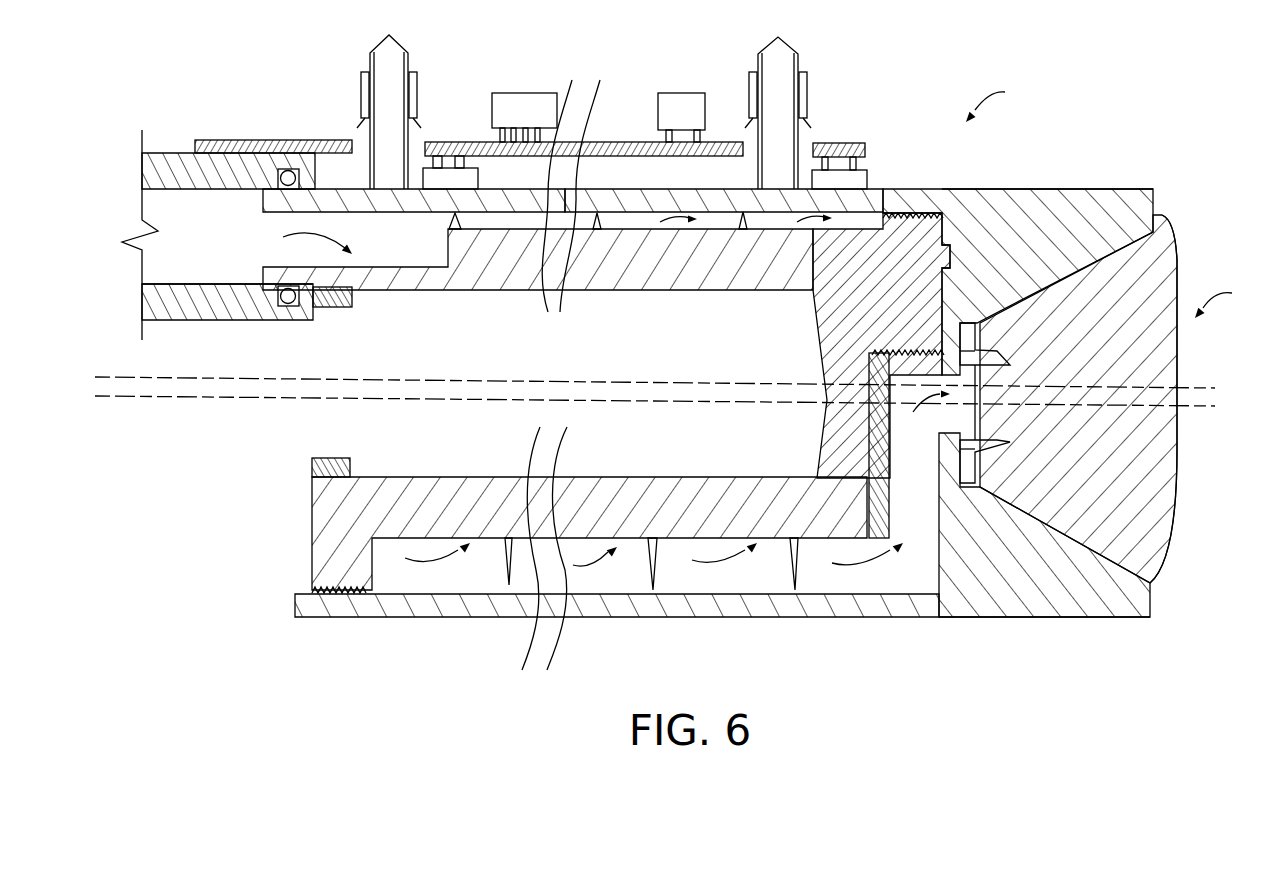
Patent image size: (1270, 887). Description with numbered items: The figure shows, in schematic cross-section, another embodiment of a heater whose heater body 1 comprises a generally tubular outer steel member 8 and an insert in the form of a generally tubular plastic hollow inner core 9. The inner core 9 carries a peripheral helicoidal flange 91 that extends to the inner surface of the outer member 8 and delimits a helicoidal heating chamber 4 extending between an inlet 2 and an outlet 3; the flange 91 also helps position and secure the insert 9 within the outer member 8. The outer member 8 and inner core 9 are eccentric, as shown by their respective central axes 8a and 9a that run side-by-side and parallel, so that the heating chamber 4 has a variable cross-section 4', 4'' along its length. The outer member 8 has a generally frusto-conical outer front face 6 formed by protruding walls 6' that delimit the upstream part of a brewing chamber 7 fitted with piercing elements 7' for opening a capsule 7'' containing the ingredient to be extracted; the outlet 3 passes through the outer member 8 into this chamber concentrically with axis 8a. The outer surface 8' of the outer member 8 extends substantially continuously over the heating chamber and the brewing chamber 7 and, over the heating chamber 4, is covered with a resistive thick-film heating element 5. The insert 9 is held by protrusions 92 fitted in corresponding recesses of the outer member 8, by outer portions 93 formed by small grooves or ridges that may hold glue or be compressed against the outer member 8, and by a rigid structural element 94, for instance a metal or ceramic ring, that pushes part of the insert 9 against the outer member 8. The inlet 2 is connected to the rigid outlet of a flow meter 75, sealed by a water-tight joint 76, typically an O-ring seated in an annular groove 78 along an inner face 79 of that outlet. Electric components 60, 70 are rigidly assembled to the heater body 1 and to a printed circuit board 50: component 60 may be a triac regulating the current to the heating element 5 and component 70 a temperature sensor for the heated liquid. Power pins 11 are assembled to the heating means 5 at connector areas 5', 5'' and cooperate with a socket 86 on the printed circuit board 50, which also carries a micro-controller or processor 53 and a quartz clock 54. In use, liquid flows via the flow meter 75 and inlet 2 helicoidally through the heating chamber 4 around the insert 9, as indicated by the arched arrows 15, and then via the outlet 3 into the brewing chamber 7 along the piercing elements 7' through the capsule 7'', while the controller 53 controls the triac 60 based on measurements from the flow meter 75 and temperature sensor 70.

The heater body 1 is at (995, 100).
The inlet 2 is at (255, 251).
The outlet 3 is at (908, 500).
The helicoidal heating chamber 4 is at (726, 603).
The variable cross-section of heating chamber 4' is at (538, 286).
The variable cross-section of heating chamber 4'' is at (437, 603).
The resistive thick-film heating element 5 is at (617, 637).
The connector area 5' is at (414, 226).
The connector area 5'' is at (724, 188).
The frusto-conical outer front face 6 is at (1018, 264).
The protruding walls 6' is at (1047, 190).
The brewing chamber 7 is at (1113, 399).
The piercing elements 7' is at (1005, 403).
The capsule 7'' is at (1181, 399).
The tubular outer steel member 8 is at (962, 552).
The outer surface 8' is at (1044, 651).
The central axis of outer member 8a is at (498, 401).
The hollow inner core 9 is at (748, 503).
The central axis of inner core 9a is at (379, 380).
The power pins 11 is at (381, 63).
The arched arrows 15 is at (713, 567).
The printed circuit board 50 is at (263, 147).
The micro-controller or processor 53 is at (532, 100).
The quartz clock 54 is at (670, 102).
The electric component (triac) 60 is at (443, 177).
The electric component (temperature sensor) 70 is at (842, 180).
The flow meter 75 is at (198, 297).
The water-tight joint 76 is at (288, 305).
The annular groove 78 is at (294, 312).
The inner face of flow meter outlet 79 is at (240, 283).
The socket 86 is at (358, 92).
The peripheral helicoidal flange 91 is at (597, 230).
The protrusions 92 is at (951, 256).
The outer portions 93 is at (908, 232).
The structural element 94 is at (313, 470).